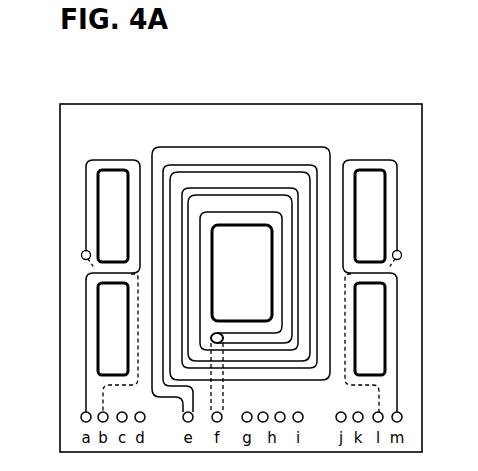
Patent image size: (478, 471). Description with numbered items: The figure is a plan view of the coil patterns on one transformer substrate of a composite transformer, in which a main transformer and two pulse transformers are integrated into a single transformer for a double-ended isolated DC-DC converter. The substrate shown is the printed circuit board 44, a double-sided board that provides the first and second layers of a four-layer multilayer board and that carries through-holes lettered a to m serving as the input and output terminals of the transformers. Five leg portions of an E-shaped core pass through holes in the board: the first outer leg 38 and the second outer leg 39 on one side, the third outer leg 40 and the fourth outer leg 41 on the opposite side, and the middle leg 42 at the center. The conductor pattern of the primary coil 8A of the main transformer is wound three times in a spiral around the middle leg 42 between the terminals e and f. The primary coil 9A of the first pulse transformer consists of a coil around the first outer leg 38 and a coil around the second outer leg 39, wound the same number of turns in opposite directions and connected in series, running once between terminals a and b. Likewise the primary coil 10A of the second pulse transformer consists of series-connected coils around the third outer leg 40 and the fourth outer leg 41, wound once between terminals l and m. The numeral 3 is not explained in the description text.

The printed circuit board 44 is at (116, 103).
The primary coil 8A is at (190, 158).
The middle leg 42 is at (247, 233).
The primary coil 9A is at (107, 158).
The primary coil 10A is at (367, 158).
The first outer leg 38 is at (110, 215).
The second outer leg 39 is at (110, 330).
The third outer leg 40 is at (372, 198).
The fourth outer leg 41 is at (372, 310).
The antenna device 3 is at (473, 257).